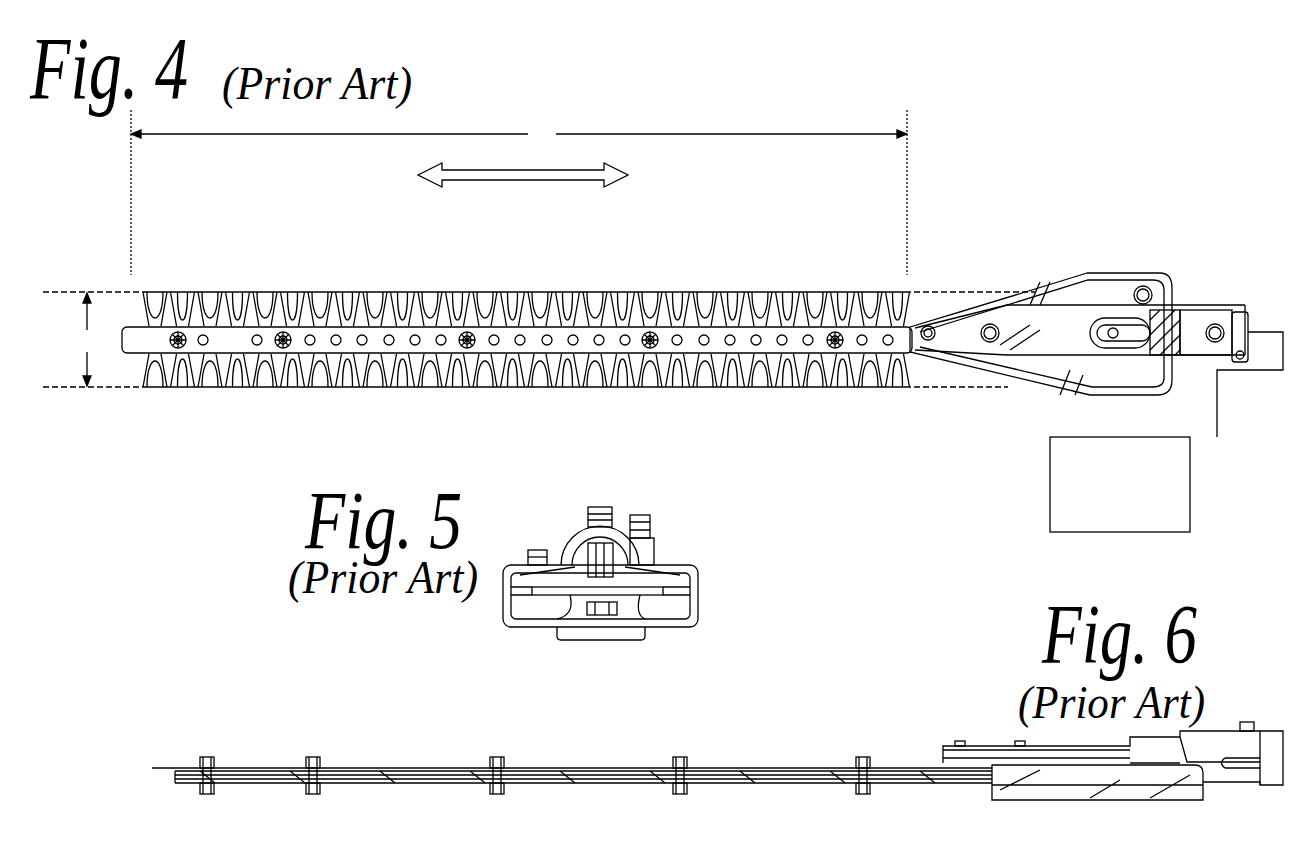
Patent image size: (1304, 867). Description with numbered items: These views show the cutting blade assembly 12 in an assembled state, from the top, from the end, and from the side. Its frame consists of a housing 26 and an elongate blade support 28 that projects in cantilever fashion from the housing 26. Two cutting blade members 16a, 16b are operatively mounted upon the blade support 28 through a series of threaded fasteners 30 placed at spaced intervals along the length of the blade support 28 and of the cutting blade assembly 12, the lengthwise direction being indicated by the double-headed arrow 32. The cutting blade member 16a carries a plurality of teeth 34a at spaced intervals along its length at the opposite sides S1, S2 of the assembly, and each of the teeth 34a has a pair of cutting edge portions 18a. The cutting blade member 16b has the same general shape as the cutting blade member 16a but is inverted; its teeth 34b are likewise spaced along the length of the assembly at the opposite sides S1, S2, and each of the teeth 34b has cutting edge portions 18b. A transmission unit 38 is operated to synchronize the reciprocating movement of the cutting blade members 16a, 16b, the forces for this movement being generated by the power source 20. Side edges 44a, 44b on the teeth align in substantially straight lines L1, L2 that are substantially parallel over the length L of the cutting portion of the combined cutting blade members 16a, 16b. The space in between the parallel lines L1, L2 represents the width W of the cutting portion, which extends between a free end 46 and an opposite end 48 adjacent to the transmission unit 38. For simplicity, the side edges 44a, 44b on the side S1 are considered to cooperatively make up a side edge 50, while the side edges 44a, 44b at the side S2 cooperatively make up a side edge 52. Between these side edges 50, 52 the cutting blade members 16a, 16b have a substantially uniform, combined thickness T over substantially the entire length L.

In FIG. 4, the cutting blade assembly 12 is at (862, 243).
In FIG. 5, the cutting blade assembly 12 is at (692, 536).
In FIG. 6, the cutting blade assembly 12 is at (920, 738).
In FIG. 4, the cutting blade member 16a is at (318, 292).
In FIG. 4, the cutting blade member 16b is at (398, 292).
In FIG. 4, the cutting edge portions 18a is at (345, 292).
In FIG. 4, the cutting edge portions 18b is at (650, 292).
In FIG. 4, the power source 20 is at (1108, 524).
In FIG. 4, the housing 26 is at (1112, 296).
In FIG. 6, the housing 26 is at (1000, 800).
In FIG. 6, the blade support 28 is at (590, 768).
In FIG. 4, the threaded fasteners 30 is at (183, 290).
In FIG. 5, the threaded fasteners 30 is at (602, 614).
In FIG. 6, the threaded fasteners 30 is at (313, 757).
In FIG. 4, the double-headed arrow 32 is at (628, 175).
In FIG. 4, the teeth 34a is at (372, 292).
In FIG. 4, the teeth 34b is at (680, 292).
In FIG. 4, the transmission unit 38 is at (1087, 257).
In FIG. 4, the side edges 44a is at (592, 292).
In FIG. 4, the side edges 44b is at (556, 292).
In FIG. 4, the free end 46 is at (118, 358).
In FIG. 4, the opposite end 48 is at (905, 372).
In FIG. 5, the side edge 50 is at (515, 597).
In FIG. 5, the side edge 52 is at (688, 567).
In FIG. 5, the combined thickness T is at (692, 617).
In FIG. 4, the length L is at (519, 192).
In FIG. 4, the width W is at (86, 339).
In FIG. 4, the straight line L1 is at (50, 290).
In FIG. 4, the straight line L2 is at (57, 390).
In FIG. 4, the side S1 is at (606, 292).
In FIG. 4, the side S2 is at (555, 393).